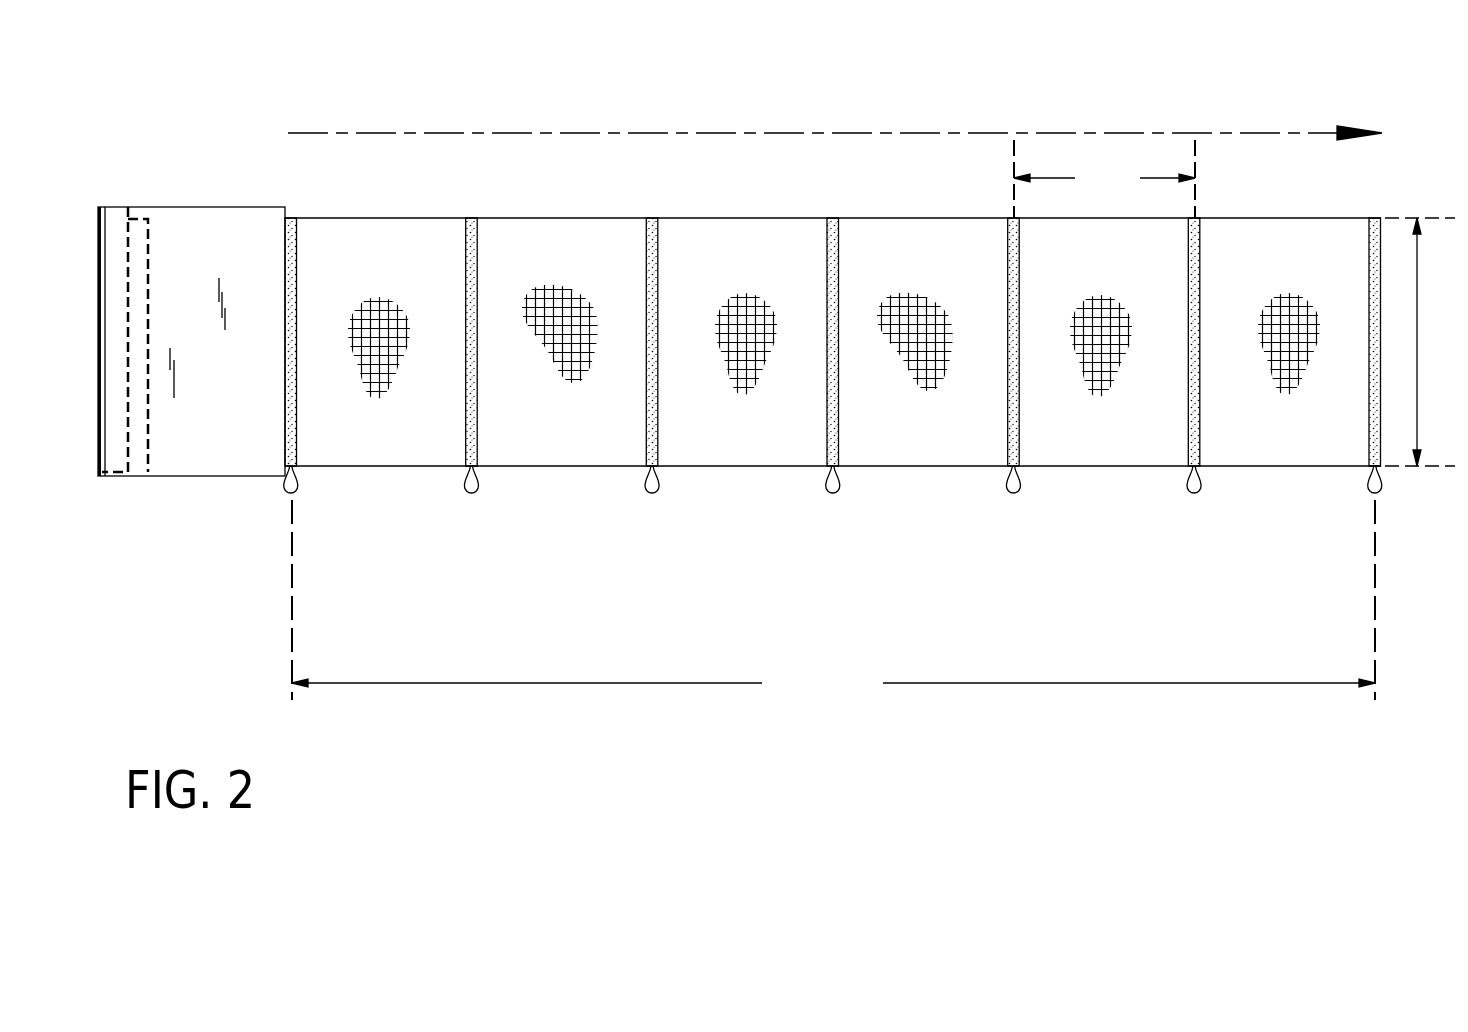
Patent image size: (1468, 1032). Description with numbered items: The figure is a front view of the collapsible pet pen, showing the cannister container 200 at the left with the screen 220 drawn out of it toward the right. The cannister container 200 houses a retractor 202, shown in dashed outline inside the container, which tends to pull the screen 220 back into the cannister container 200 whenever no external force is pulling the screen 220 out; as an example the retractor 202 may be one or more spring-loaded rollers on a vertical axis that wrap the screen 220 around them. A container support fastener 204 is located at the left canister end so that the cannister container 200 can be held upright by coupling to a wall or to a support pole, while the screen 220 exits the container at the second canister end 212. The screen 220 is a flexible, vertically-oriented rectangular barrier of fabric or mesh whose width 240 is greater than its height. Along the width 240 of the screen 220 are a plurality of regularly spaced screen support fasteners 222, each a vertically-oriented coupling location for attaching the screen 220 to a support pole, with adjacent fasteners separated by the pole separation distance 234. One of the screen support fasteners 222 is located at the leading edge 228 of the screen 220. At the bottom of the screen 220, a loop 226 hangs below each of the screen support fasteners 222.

The cannister container 200 is at (222, 460).
The retractor 202 is at (148, 262).
The container support fastener 204 is at (98, 470).
The second canister end 212 is at (1420, 342).
The screen 220 is at (737, 452).
The screen support fasteners 222 is at (835, 218).
The loops 226 is at (1195, 490).
The leading edge 228 is at (1353, 452).
The pole separation distance 234 is at (1104, 179).
The width 240 is at (833, 602).